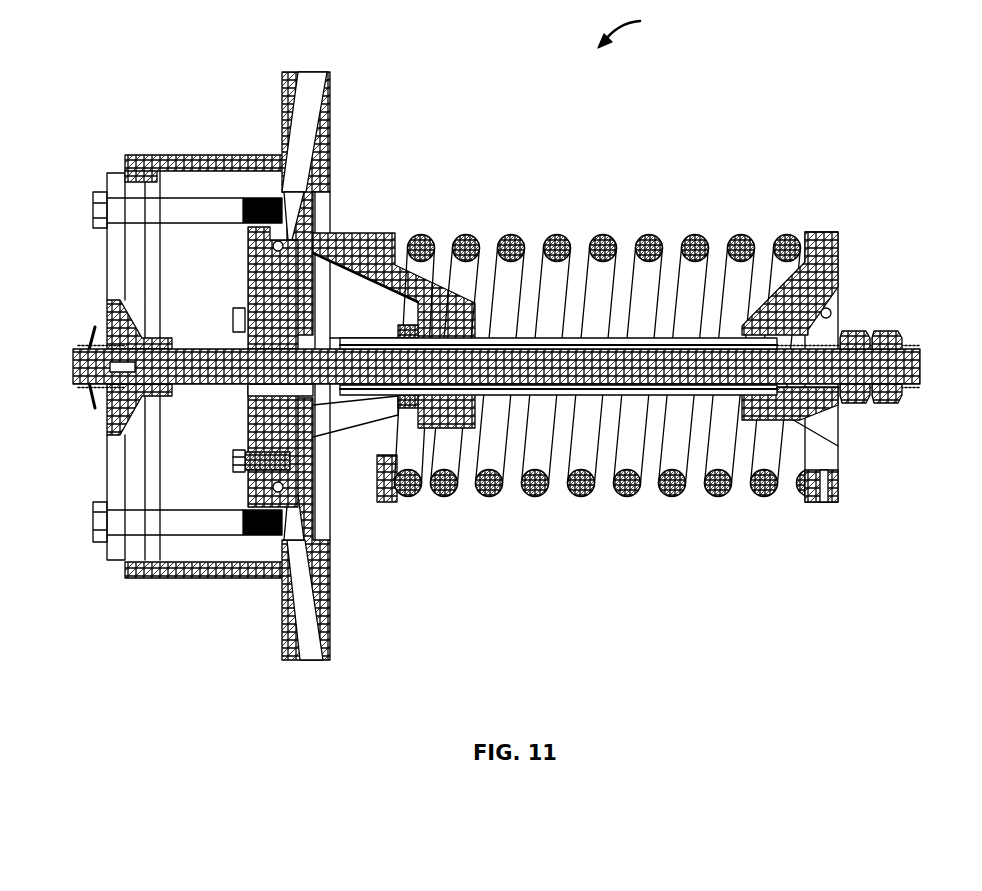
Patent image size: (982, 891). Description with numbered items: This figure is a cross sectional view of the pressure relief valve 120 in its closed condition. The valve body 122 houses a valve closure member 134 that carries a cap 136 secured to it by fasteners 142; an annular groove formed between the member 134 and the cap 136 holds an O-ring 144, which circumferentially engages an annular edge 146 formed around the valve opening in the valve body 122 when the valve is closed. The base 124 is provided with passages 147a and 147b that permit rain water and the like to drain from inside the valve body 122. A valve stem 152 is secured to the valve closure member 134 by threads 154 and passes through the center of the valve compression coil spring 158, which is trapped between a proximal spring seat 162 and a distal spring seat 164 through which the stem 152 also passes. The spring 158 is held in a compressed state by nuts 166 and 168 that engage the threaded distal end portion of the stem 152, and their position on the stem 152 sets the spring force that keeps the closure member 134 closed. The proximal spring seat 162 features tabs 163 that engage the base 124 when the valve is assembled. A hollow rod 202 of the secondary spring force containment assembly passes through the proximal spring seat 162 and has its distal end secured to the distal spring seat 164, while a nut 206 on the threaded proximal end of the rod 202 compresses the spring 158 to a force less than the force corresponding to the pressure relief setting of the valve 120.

The pressure relief valve 120 is at (645, 31).
The valve body 122 is at (224, 155).
The base 124 is at (282, 610).
The valve closure member 134 is at (272, 281).
The cap 136 is at (247, 431).
The fasteners 142 is at (231, 322).
The O-ring 144 is at (274, 248).
The annular edge 146 is at (274, 486).
The passage 147a is at (313, 615).
The passage 147b is at (312, 123).
The valve stem 152 is at (567, 373).
The threads 154 is at (262, 393).
The valve compression coil spring 158 is at (674, 498).
The proximal spring seat 162 is at (388, 497).
The tabs 163 is at (346, 240).
The distal spring seat 164 is at (828, 502).
The nut 166 is at (888, 403).
The nut 168 is at (853, 404).
The hollow rod 202 is at (497, 393).
The nut 206 is at (397, 402).